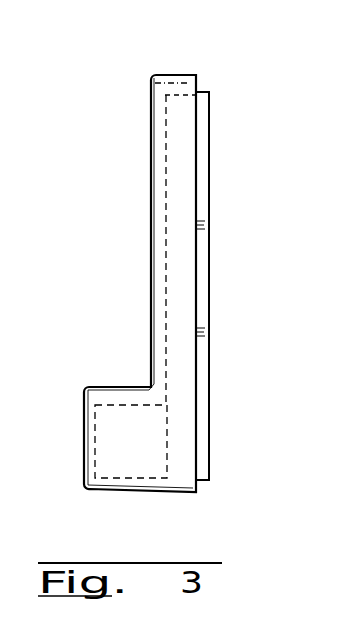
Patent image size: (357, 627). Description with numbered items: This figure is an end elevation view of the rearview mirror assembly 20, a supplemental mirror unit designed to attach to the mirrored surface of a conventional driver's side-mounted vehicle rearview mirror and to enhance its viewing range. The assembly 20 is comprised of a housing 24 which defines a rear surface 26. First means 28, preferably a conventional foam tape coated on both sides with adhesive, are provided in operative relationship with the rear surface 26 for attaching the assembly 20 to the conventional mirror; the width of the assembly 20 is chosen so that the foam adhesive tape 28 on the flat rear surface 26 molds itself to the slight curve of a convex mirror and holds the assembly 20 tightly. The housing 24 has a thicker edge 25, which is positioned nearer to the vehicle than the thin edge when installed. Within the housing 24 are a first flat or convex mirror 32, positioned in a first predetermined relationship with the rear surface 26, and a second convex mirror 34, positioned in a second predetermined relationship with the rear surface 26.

The rearview mirror assembly 20 is at (222, 258).
The housing 24 is at (177, 85).
The thicker edge 25 is at (175, 253).
The rear surface 26 is at (197, 138).
The first means 28 is at (210, 337).
The first flat or convex mirror 32 is at (165, 142).
The second convex mirror 34 is at (97, 435).